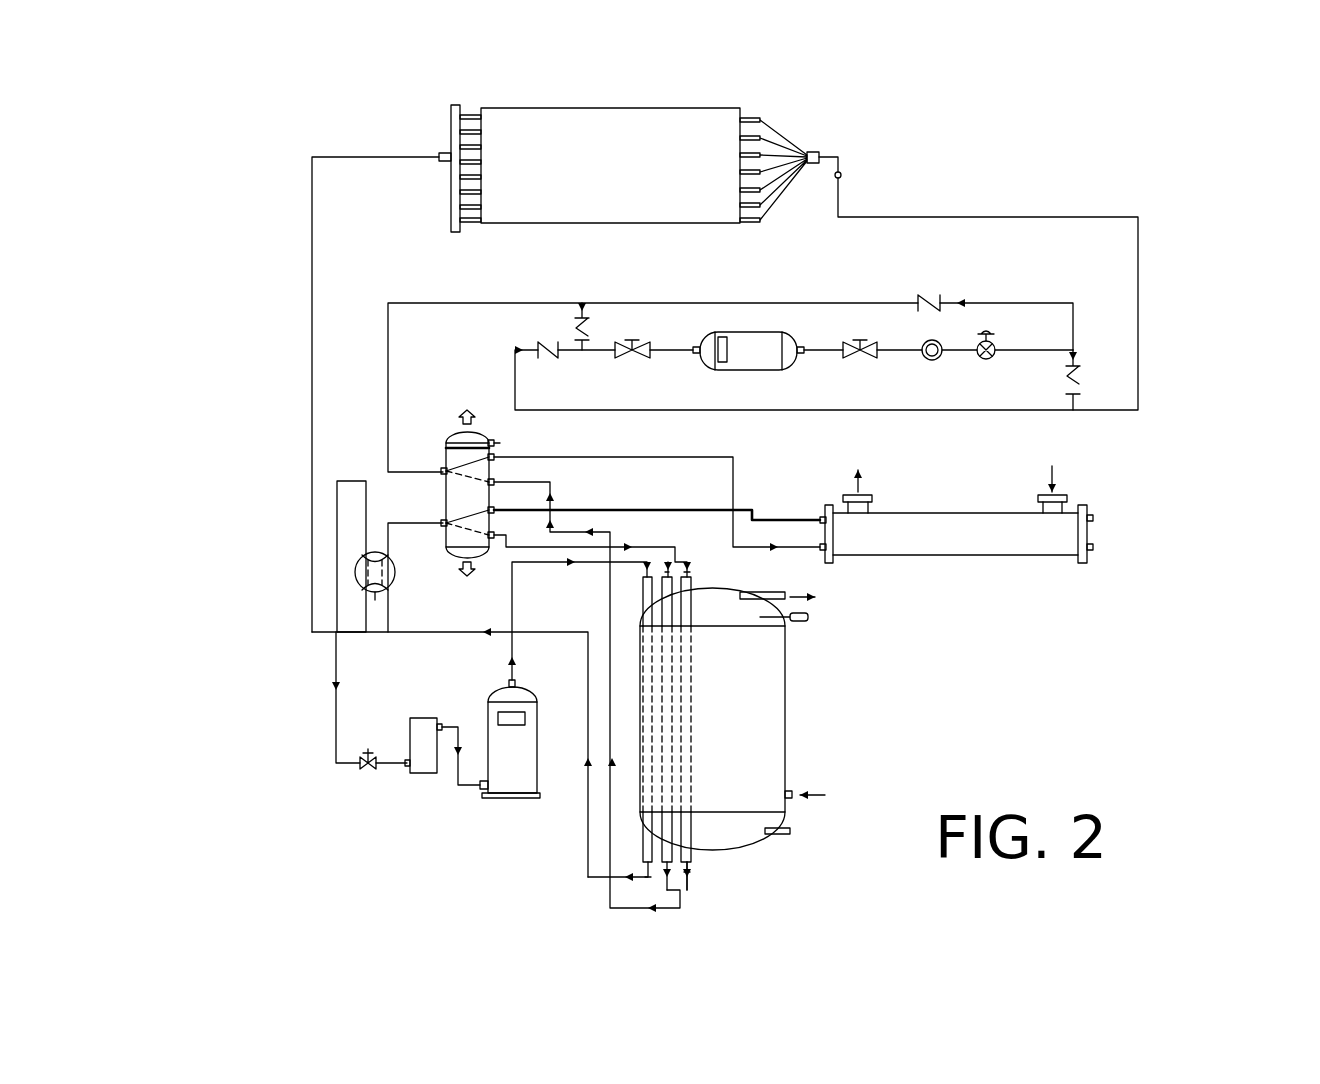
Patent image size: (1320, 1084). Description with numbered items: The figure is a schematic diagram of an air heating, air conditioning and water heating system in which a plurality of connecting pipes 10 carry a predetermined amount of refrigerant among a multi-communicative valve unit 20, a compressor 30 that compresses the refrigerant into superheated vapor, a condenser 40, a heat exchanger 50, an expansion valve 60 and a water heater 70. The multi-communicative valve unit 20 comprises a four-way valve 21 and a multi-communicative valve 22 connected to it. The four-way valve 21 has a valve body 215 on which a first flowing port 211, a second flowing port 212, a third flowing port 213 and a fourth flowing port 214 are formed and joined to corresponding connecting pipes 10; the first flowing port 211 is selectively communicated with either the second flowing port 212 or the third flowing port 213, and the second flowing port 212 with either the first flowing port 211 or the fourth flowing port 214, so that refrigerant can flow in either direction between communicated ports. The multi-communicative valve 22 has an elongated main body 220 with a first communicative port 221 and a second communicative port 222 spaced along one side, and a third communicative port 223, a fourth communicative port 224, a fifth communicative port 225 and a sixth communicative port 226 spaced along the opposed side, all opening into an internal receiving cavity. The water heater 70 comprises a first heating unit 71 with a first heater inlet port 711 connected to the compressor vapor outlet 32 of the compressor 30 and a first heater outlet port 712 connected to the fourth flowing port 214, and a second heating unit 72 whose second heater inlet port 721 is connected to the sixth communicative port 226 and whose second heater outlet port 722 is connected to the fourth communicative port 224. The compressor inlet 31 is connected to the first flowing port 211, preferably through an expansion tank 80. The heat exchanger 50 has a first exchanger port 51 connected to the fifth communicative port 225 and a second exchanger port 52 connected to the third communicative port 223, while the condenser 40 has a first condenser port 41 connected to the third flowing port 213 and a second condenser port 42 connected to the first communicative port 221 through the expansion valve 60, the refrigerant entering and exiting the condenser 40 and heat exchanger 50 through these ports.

The connecting pipes 10 is at (975, 215).
The multi-communicative valve unit 20 is at (364, 433).
The four-way valve 21 is at (340, 573).
The first flowing port 211 is at (378, 546).
The second flowing port 212 is at (346, 550).
The third flowing port 213 is at (355, 593).
The fourth flowing port 214 is at (390, 597).
The valve body 215 is at (388, 590).
The multi-communicative valve 22 is at (455, 440).
The elongated main body 220 is at (455, 450).
The first communicative port 221 is at (428, 462).
The second communicative port 222 is at (426, 514).
The third communicative port 223 is at (501, 490).
The fourth communicative port 224 is at (497, 462).
The fifth communicative port 225 is at (494, 436).
The sixth communicative port 226 is at (492, 556).
The compressor 30 is at (515, 788).
The compressor inlet 31 is at (480, 797).
The compressor vapor outlet 32 is at (340, 762).
The condenser 40 is at (683, 160).
The first condenser port 41 is at (438, 148).
The second condenser port 42 is at (830, 150).
The heat exchanger 50 is at (1052, 535).
The first exchanger port 51 is at (815, 533).
The second exchanger port 52 is at (816, 503).
The expansion valve 60 is at (988, 345).
The water heater 70 is at (743, 690).
The first heating unit 71 is at (630, 838).
The second heating unit 72 is at (727, 740).
The first heater inlet port 711 is at (662, 570).
The first heater outlet port 712 is at (651, 882).
The second heater inlet port 721 is at (700, 572).
The second heater outlet port 722 is at (692, 875).
The expansion tank 80 is at (423, 762).